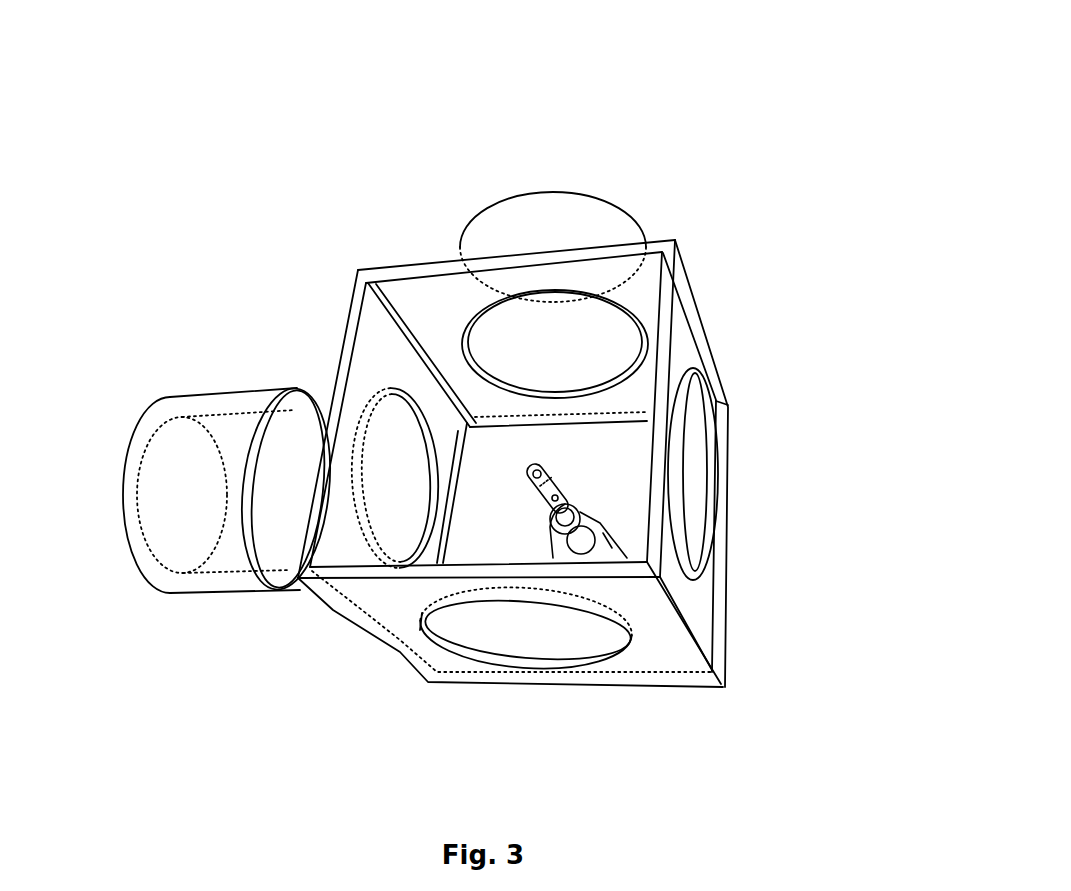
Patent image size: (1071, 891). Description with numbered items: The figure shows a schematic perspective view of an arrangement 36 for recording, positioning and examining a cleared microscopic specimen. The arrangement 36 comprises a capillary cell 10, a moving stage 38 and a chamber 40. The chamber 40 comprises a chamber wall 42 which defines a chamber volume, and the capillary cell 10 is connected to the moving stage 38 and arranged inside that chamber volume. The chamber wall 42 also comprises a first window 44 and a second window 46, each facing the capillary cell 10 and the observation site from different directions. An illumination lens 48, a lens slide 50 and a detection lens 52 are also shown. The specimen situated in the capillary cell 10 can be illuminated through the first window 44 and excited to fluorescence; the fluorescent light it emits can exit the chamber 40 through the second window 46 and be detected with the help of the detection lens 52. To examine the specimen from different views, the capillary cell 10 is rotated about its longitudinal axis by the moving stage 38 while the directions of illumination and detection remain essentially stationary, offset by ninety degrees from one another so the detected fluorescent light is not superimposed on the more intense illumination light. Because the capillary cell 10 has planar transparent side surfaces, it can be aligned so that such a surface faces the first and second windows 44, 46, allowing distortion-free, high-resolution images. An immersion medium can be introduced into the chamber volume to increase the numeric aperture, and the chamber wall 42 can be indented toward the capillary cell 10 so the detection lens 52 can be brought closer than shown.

The capillary cell 10 is at (533, 468).
The arrangement 36 is at (767, 92).
The moving stage 38 is at (599, 513).
The chamber 40 is at (685, 722).
The chamber wall 42 is at (697, 610).
The first window 44 is at (397, 463).
The second window 46 is at (522, 342).
The illumination lens 48 is at (297, 440).
The lens slide 50 is at (183, 470).
The detection lens 52 is at (550, 220).